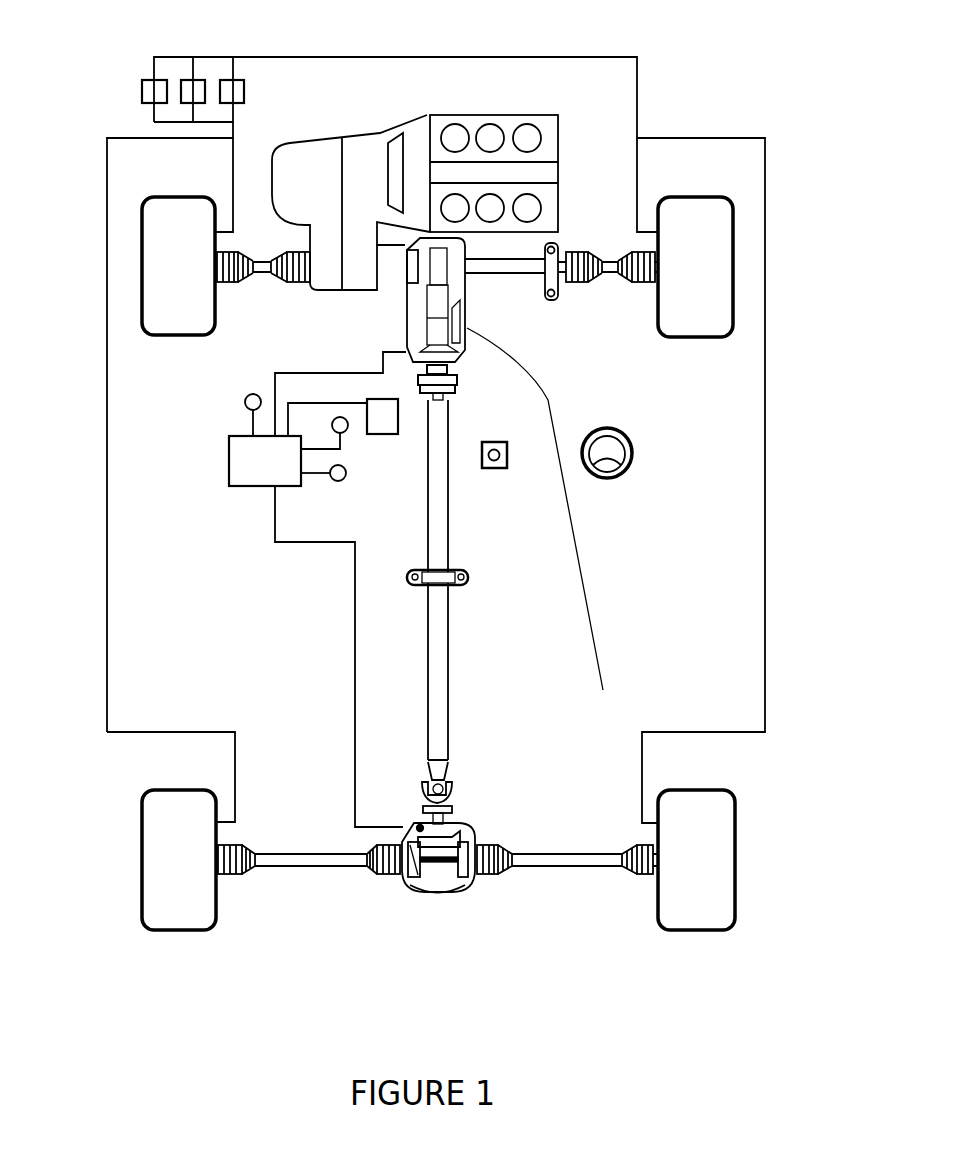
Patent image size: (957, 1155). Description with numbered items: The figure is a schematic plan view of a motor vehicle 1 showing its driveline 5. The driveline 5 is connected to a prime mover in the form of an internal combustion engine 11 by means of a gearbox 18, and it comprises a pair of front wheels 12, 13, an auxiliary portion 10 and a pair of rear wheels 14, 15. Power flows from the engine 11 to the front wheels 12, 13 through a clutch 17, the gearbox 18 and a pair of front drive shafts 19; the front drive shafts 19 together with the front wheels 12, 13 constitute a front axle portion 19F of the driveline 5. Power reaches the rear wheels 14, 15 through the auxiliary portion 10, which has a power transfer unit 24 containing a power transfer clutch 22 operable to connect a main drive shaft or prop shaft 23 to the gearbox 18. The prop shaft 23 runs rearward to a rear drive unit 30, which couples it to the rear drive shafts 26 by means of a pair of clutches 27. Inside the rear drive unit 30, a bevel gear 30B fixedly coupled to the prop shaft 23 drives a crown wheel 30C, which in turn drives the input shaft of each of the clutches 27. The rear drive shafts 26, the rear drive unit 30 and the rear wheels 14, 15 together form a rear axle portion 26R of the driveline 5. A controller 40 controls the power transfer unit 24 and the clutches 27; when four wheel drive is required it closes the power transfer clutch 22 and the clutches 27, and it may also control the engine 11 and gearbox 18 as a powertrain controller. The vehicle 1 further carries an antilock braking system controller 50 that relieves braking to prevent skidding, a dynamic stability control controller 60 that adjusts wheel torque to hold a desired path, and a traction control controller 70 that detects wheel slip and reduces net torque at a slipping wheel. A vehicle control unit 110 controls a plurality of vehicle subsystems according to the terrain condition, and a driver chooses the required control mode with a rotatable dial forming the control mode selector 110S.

The motor vehicle 1 is at (655, 36).
The driveline 5 is at (288, 623).
The auxiliary portion 10 is at (437, 622).
The internal combustion engine 11 is at (552, 128).
The front wheel 12 is at (173, 213).
The front wheel 13 is at (702, 212).
The rear wheel 14 is at (182, 915).
The rear wheel 15 is at (693, 913).
The clutch 17 is at (425, 182).
The gearbox 18 is at (362, 152).
The front drive shafts 19 is at (263, 273).
The front axle portion 19F is at (617, 236).
The power transfer clutch 22 is at (413, 268).
The prop shaft 23 is at (427, 523).
The power transfer unit 24 is at (467, 308).
The rear drive shafts 26 is at (320, 859).
The rear axle portion 26R is at (345, 987).
The clutches 27 is at (408, 880).
The rear drive unit 30 is at (453, 900).
The bevel gear 30B is at (457, 842).
The crown wheel 30C is at (430, 893).
The controller 40 is at (229, 462).
The antilock braking system controller 50 is at (188, 82).
The dynamic stability control system controller 60 is at (235, 82).
The traction control system controller 70 is at (145, 90).
The vehicle control unit 110 is at (383, 435).
The control mode selector 110S is at (497, 468).